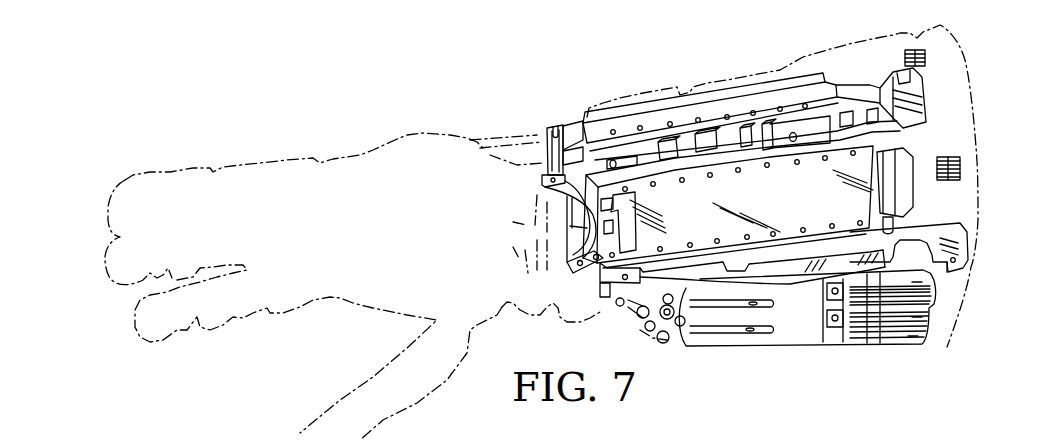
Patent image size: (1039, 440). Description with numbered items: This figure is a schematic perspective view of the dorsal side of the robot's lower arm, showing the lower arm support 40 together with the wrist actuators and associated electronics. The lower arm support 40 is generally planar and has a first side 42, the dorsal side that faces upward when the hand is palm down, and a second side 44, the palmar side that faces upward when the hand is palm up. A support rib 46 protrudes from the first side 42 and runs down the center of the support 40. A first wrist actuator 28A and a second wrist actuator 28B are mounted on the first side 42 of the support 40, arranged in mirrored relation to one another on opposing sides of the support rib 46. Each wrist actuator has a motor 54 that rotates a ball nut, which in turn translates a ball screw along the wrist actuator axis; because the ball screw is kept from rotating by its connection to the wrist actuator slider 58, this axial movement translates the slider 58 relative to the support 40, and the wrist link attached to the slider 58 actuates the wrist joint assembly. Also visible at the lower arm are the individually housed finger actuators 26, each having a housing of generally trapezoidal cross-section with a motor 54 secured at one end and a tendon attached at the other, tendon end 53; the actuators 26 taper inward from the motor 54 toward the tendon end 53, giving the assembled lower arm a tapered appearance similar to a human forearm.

The finger actuator 26 is at (773, 350).
The first wrist actuator 28A is at (657, 117).
The second wrist actuator 28B is at (667, 202).
The lower arm support 40 is at (843, 268).
The first side 42 is at (950, 234).
The second side 44 is at (950, 272).
The support rib 46 is at (543, 128).
The tendon end 53 is at (683, 300).
The motor 54 is at (918, 280).
The wrist actuator slider 58 is at (765, 93).